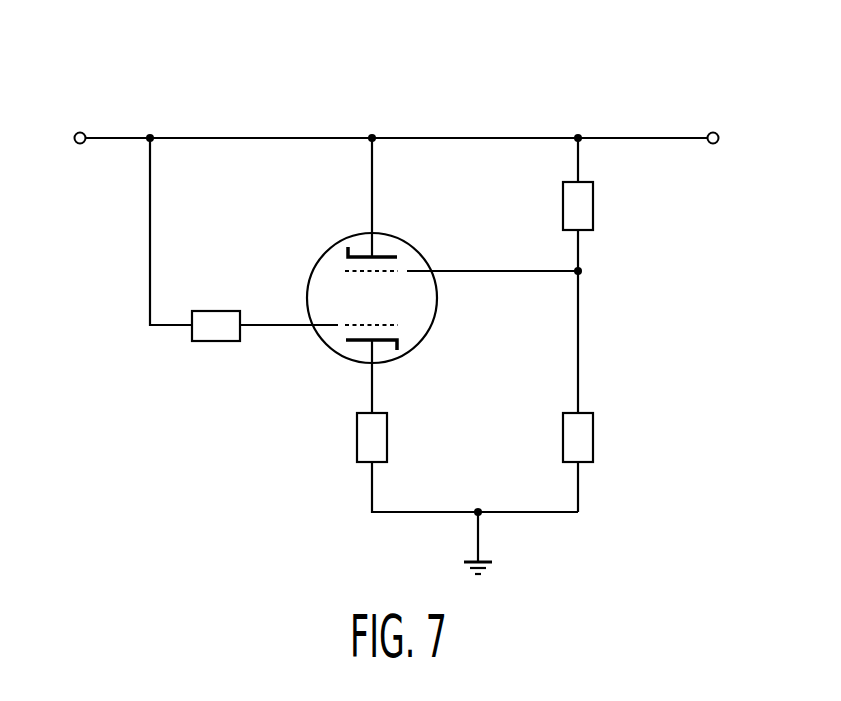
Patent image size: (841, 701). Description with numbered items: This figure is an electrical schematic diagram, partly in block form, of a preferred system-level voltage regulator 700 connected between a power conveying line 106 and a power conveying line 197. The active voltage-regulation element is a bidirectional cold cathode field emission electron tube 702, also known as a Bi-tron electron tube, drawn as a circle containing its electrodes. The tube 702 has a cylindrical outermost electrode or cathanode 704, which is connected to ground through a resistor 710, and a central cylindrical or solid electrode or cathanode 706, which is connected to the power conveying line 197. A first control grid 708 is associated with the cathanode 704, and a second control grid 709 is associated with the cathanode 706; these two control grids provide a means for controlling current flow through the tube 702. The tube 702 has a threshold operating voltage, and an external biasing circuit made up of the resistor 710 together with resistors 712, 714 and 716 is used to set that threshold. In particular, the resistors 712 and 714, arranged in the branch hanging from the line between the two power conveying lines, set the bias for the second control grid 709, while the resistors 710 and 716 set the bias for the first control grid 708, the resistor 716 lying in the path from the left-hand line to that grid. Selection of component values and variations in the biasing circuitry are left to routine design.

The system-level voltage regulator 700 is at (118, 90).
The power conveying line 106 is at (80, 145).
The power conveying line 197 is at (716, 128).
The bidirectional cold cathode field emission electron tube 702 is at (330, 348).
The cathanode 704 is at (385, 343).
The cathanode 706 is at (387, 255).
The first control grid 708 is at (357, 323).
The second control grid 709 is at (388, 273).
The resistor 710 is at (356, 442).
The resistor 712 is at (595, 444).
The resistor 714 is at (596, 204).
The resistor 716 is at (213, 309).